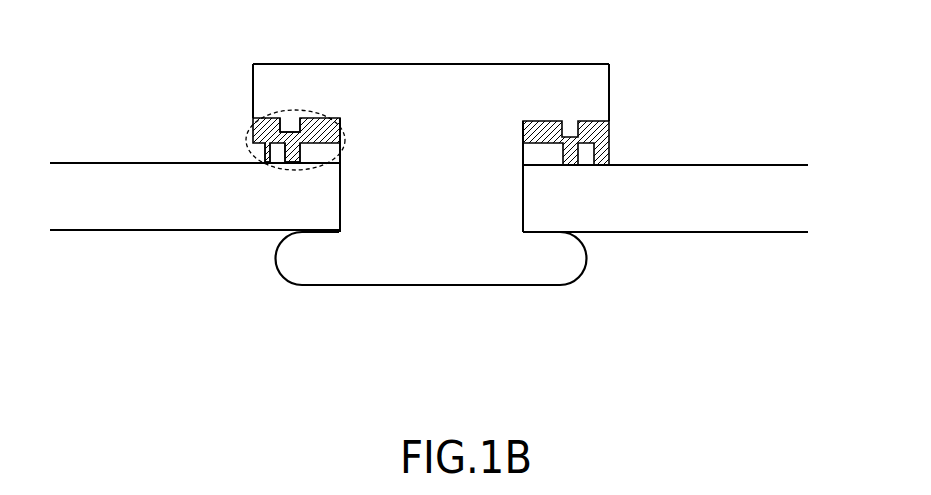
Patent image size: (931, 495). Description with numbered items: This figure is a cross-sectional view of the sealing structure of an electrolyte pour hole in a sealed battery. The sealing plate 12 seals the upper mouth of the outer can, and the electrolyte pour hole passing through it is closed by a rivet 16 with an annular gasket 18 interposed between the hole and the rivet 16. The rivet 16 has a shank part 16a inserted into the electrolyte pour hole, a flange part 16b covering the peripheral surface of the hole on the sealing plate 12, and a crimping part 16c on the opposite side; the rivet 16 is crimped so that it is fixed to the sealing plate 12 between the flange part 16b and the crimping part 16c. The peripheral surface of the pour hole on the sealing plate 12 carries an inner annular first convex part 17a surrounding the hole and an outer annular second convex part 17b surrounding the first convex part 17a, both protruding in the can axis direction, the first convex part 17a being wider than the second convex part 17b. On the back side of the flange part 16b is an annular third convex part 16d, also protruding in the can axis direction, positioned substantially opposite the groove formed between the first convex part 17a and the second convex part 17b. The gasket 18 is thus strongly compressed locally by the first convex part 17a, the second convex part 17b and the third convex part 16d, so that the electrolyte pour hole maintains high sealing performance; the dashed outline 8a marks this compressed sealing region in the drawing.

The fitting region 8a is at (300, 171).
The sealing plate 12 is at (144, 212).
The rivet 16 is at (445, 184).
The shank part 16a is at (350, 213).
The flange part 16b is at (320, 95).
The crimping part 16c is at (533, 267).
The third convex part 16d is at (288, 128).
The first convex part 17a is at (293, 162).
The second convex part 17b is at (273, 165).
The gasket 18 is at (253, 125).